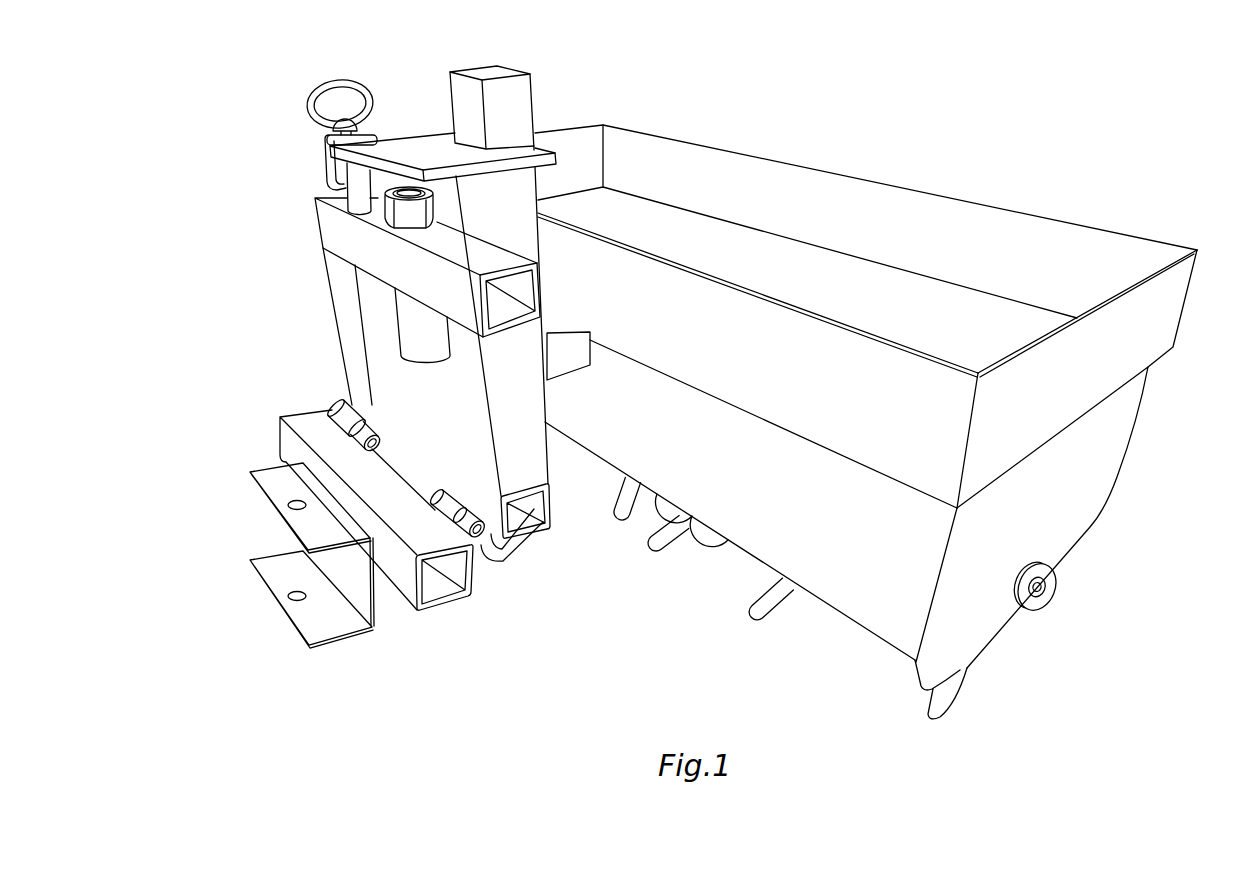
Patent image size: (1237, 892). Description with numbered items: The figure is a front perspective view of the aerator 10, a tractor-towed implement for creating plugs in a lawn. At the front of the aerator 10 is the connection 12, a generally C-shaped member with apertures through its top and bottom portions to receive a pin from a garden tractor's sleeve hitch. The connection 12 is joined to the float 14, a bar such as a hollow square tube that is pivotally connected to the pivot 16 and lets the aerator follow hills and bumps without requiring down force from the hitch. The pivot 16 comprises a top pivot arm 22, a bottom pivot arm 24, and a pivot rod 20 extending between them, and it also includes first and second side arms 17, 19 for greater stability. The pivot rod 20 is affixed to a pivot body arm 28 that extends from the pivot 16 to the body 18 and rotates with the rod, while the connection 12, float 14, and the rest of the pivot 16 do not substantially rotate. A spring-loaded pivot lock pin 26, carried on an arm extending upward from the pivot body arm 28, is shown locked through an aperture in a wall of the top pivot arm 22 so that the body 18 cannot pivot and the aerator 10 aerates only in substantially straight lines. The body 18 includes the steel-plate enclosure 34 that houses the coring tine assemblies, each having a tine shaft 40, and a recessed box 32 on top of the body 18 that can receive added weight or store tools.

The aerator 10 is at (787, 91).
The connection 12 is at (270, 566).
The float 14 is at (326, 396).
The pivot 16 is at (552, 538).
The first side arm 17 is at (352, 280).
The body 18 is at (904, 186).
The second side arm 19 is at (518, 398).
The pivot rod 20 is at (410, 330).
The top pivot arm 22 is at (330, 222).
The bottom pivot arm 24 is at (551, 487).
The pivot lock pin 26 is at (322, 84).
The pivot body arm 28 is at (563, 367).
The box 32 is at (1025, 240).
The enclosure 34 is at (767, 550).
The tine shaft 40 is at (1048, 588).